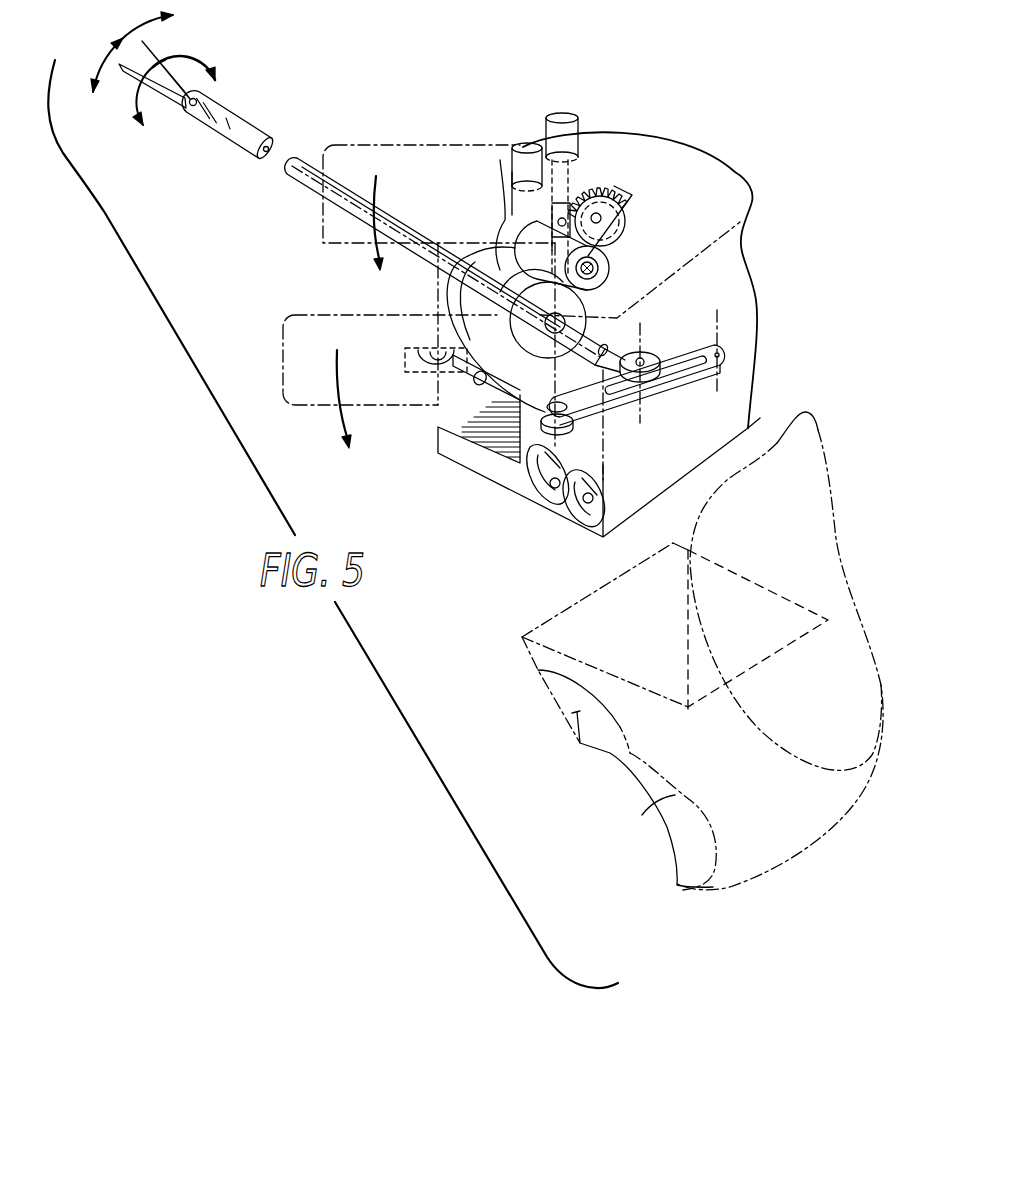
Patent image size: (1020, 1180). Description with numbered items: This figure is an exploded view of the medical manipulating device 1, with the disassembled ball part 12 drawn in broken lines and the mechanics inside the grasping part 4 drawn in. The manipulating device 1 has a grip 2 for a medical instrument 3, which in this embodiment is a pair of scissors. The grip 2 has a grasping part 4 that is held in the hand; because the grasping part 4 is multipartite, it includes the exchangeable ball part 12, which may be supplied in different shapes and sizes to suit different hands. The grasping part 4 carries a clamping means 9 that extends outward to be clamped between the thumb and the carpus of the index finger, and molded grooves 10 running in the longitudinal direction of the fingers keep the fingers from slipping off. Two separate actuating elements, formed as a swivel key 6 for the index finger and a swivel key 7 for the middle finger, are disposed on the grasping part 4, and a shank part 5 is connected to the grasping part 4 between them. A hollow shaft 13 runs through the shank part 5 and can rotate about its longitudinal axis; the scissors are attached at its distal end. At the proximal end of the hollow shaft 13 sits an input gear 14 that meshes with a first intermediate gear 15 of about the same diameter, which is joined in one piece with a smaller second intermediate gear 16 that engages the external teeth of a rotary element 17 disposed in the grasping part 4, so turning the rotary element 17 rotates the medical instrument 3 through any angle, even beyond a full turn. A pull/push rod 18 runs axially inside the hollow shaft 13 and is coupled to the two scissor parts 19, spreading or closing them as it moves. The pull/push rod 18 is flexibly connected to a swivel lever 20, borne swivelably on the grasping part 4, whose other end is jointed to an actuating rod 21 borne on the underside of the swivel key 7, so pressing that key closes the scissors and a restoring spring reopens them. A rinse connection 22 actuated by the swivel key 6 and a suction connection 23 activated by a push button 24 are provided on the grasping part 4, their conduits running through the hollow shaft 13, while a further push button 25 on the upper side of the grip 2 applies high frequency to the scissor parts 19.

The medical manipulating device 1 is at (472, 643).
The grip 2 is at (694, 120).
The medical instrument 3 is at (208, 52).
The grasping part 4 is at (772, 240).
The shank part 5 is at (307, 167).
The swivel key 6 is at (407, 157).
The swivel key 7 is at (285, 350).
The clamping means 9 is at (715, 168).
The molded grooves 10 is at (577, 712).
The ball part 12 is at (662, 866).
The hollow shaft 13 is at (478, 268).
The input gear 14 is at (570, 315).
The first intermediate gear 15 is at (597, 279).
The second intermediate gear 16 is at (600, 266).
The rotary element 17 is at (623, 217).
The pull/push rod 18 is at (623, 337).
The scissor parts 19 is at (157, 50).
The swivel lever 20 is at (660, 383).
The actuating rod 21 is at (455, 386).
The rinse connection 22 is at (577, 500).
The suction connection 23 is at (548, 482).
The push button 24 is at (527, 148).
The push button 25 is at (562, 118).